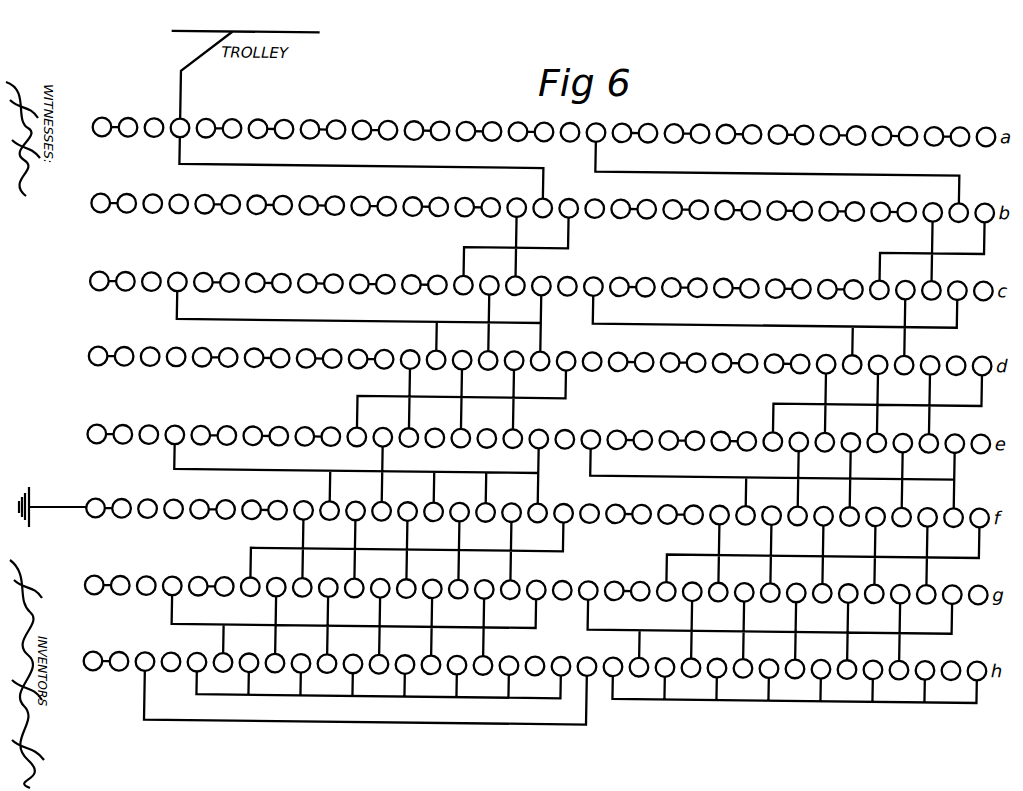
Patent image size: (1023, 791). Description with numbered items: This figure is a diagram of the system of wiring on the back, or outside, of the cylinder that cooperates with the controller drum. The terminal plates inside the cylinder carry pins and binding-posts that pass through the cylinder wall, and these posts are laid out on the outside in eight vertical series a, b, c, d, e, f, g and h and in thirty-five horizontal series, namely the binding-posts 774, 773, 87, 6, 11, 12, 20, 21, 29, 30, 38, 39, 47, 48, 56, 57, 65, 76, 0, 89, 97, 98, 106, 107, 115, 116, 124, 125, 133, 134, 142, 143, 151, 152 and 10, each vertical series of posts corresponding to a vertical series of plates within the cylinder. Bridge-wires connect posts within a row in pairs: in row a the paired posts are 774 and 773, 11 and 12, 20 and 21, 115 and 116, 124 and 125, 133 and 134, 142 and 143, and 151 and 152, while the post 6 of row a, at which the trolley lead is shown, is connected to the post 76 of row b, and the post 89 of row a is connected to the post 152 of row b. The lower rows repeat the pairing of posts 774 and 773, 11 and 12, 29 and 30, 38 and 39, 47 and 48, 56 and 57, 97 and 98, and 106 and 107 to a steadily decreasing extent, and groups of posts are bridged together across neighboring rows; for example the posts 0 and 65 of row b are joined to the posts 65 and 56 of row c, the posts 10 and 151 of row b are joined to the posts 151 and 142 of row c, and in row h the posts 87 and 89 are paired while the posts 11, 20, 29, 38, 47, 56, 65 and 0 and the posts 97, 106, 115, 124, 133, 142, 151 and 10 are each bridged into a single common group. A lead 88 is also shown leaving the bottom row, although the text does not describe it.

The binding-post 774 is at (102, 118).
The binding-post 773 is at (128, 118).
The binding-post 87 is at (154, 118).
The binding-post 6 is at (180, 118).
The binding-post 11 is at (206, 118).
The binding-post 12 is at (232, 118).
The binding-post 20 is at (258, 118).
The binding-post 21 is at (284, 118).
The binding-post 29 is at (310, 118).
The binding-post 30 is at (336, 118).
The binding-post 38 is at (362, 118).
The binding-post 39 is at (388, 118).
The binding-post 47 is at (414, 118).
The binding-post 48 is at (440, 118).
The binding-post 56 is at (466, 118).
The binding-post 57 is at (492, 118).
The binding-post 65 is at (518, 118).
The binding-post 76 is at (544, 118).
The binding-post 0 is at (570, 127).
The binding-post 89 is at (596, 118).
The binding-post 97 is at (622, 118).
The binding-post 98 is at (648, 118).
The binding-post 106 is at (674, 118).
The binding-post 107 is at (700, 118).
The binding-post 115 is at (726, 118).
The binding-post 116 is at (752, 118).
The binding-post 124 is at (778, 118).
The binding-post 125 is at (804, 118).
The binding-post 133 is at (830, 118).
The binding-post 134 is at (856, 118).
The binding-post 142 is at (882, 118).
The binding-post 143 is at (908, 118).
The binding-post 151 is at (934, 118).
The binding-post 152 is at (960, 118).
The binding-post 10 is at (986, 118).
The return conductor 88 is at (152, 720).